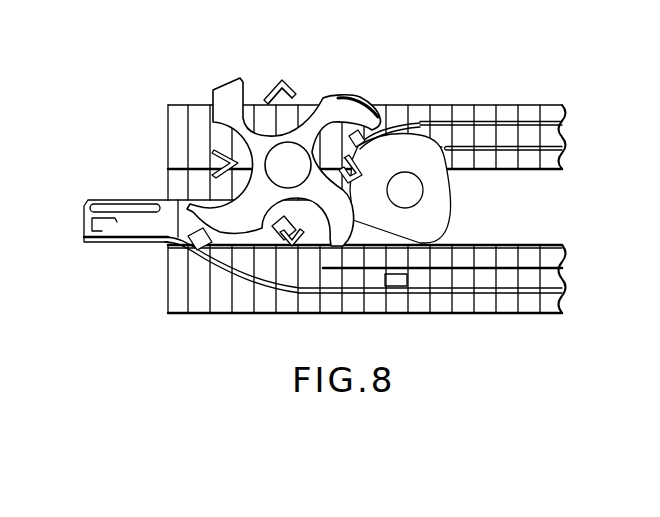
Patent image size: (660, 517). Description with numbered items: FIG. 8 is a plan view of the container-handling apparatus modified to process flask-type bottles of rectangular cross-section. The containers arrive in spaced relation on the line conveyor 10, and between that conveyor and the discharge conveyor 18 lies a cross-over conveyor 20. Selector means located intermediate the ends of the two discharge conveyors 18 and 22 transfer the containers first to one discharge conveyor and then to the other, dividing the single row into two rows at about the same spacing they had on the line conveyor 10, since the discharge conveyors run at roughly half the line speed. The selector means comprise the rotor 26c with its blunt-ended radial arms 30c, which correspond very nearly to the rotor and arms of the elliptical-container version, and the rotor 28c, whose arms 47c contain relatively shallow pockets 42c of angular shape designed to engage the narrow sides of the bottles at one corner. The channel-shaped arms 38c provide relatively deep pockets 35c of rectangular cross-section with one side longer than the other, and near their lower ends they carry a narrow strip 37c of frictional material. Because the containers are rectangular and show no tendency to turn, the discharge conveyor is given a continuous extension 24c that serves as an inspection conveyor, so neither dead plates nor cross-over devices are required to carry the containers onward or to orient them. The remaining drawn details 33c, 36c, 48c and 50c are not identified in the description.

The line conveyor 10 is at (103, 198).
The discharge conveyor 18 is at (178, 159).
The cross-over conveyor 20 is at (178, 185).
The discharge conveyor 22 is at (178, 270).
The continuous extension 24c is at (553, 130).
The rotor 26c is at (323, 102).
The rotor 28c is at (412, 201).
The radial arms 30c is at (228, 97).
The cable 33c is at (231, 312).
The pockets 35c is at (295, 90).
The strap 36c is at (418, 272).
The strip of frictional material 37c is at (270, 93).
The channel-shaped arms 38c is at (268, 92).
The pockets 42c is at (451, 202).
The arms 47c is at (413, 138).
The strap 48c is at (461, 123).
The strap 50c is at (506, 151).